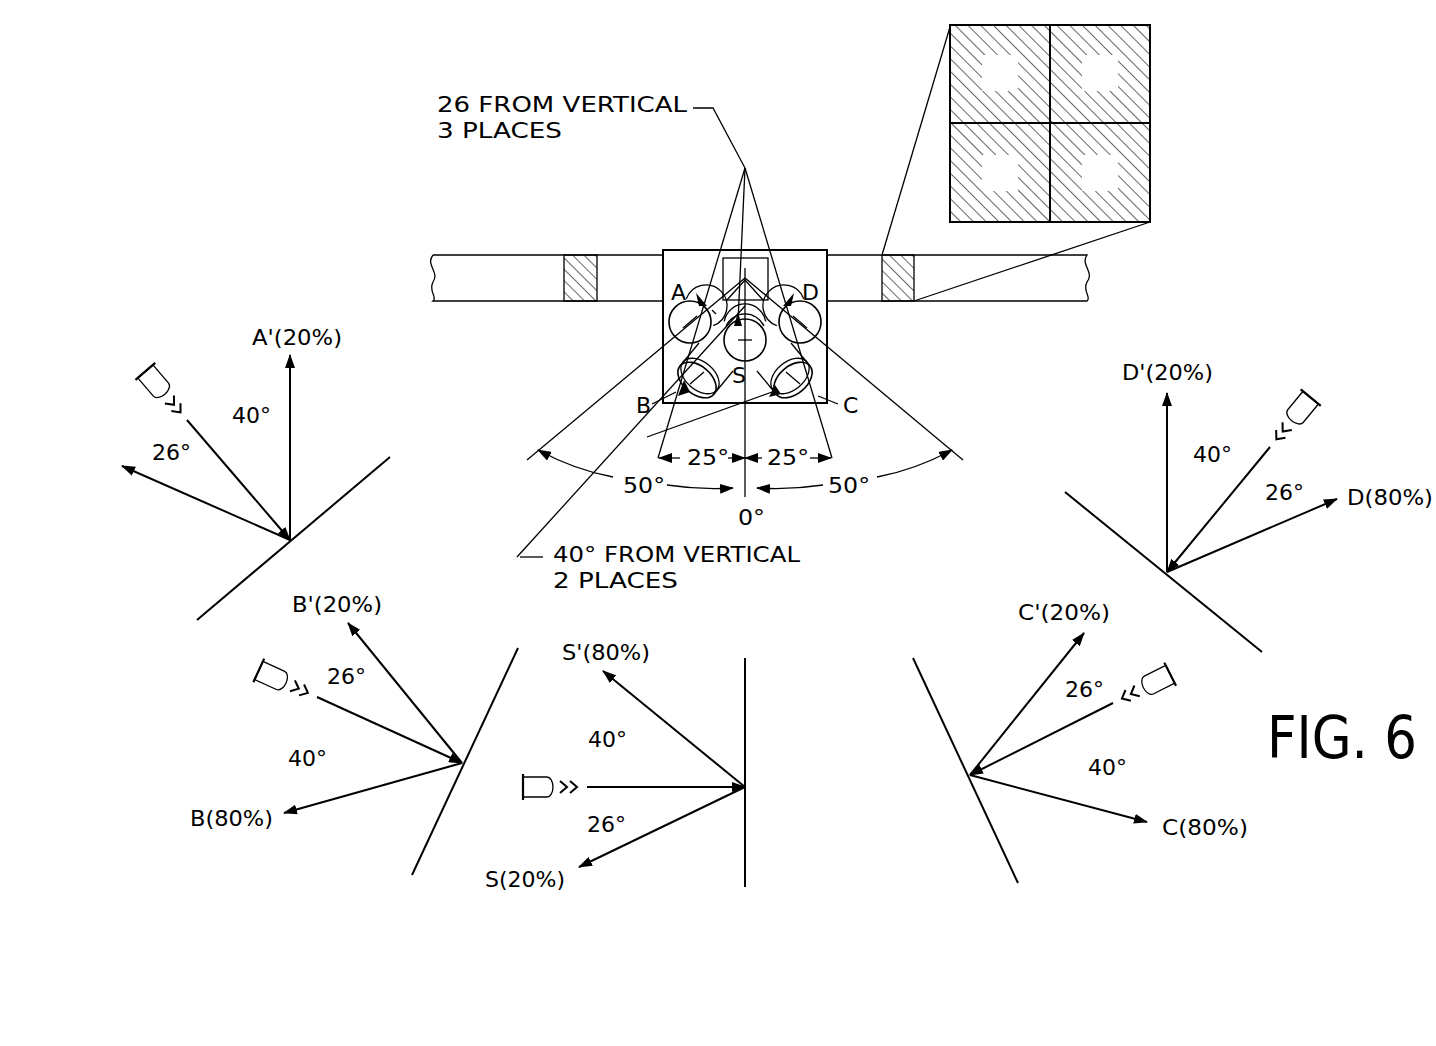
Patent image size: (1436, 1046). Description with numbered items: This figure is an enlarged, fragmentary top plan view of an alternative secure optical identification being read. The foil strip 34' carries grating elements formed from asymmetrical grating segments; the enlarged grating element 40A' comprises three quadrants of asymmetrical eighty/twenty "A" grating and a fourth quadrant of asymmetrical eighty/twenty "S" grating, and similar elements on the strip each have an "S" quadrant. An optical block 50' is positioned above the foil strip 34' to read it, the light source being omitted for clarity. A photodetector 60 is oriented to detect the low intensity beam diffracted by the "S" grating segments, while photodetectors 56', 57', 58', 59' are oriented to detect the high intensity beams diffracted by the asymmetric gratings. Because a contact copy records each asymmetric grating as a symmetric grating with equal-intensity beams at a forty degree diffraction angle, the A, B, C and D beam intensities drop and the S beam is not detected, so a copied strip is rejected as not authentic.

The foil strip 34' is at (760, 248).
The optical block 50' is at (728, 296).
The photodetector 60 is at (762, 290).
The photodetector 56' is at (655, 315).
The photodetector 57' is at (633, 374).
The photodetector 58' is at (850, 374).
The photodetector 59' is at (843, 315).
The grating element 40A' is at (1076, 163).